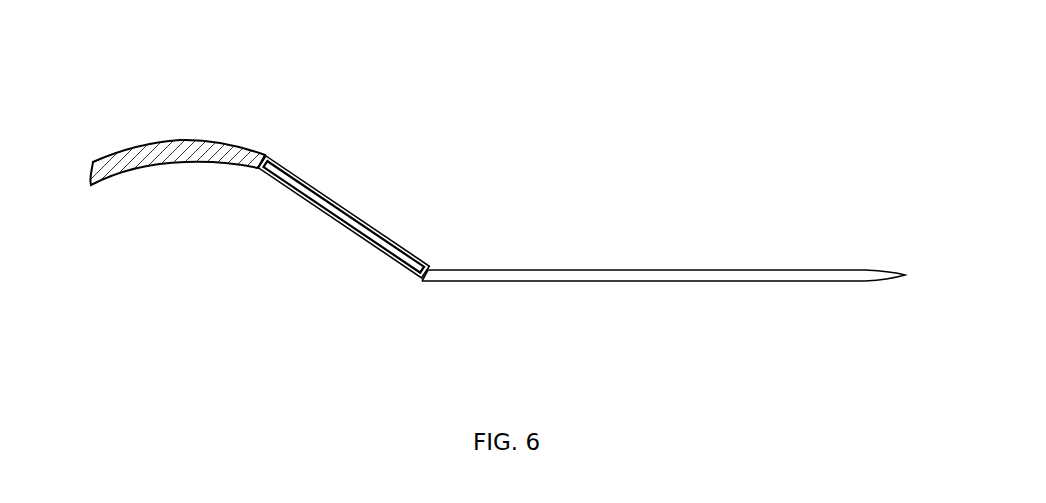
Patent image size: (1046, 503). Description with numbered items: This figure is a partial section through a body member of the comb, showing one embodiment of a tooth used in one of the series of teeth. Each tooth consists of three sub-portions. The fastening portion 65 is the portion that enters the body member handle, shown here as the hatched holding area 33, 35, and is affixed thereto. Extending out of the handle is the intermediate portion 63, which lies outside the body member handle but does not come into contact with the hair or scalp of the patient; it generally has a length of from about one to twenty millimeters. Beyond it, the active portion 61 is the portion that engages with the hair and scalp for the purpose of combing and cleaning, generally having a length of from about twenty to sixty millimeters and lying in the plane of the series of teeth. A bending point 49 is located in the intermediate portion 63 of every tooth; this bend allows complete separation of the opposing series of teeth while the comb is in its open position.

The holding area 33 is at (238, 115).
The holding area 35 is at (218, 153).
The fastening portion 65 is at (278, 152).
The active portion 61 is at (898, 263).
The intermediate portion 63 is at (432, 289).
The bending point 49 is at (428, 280).